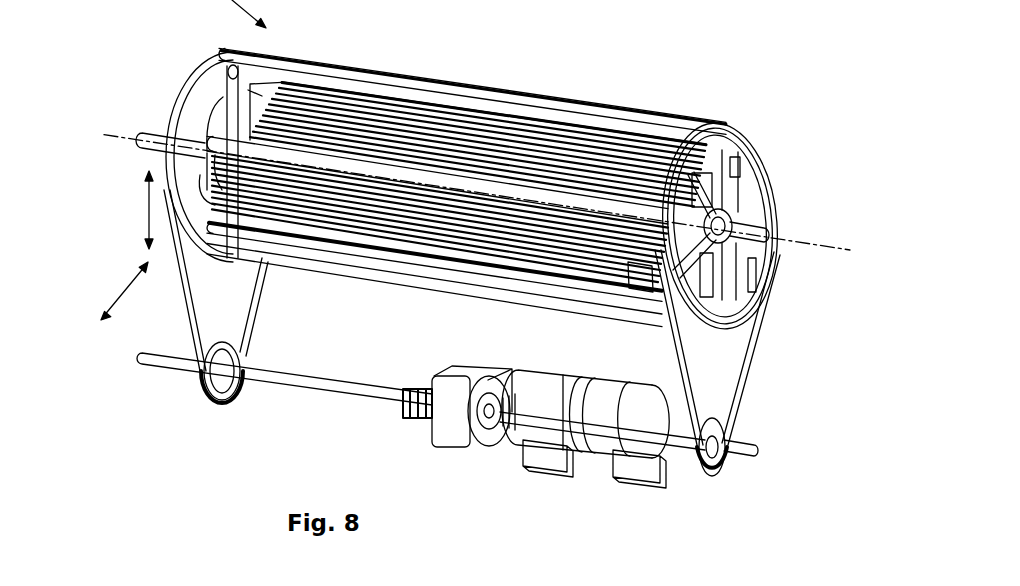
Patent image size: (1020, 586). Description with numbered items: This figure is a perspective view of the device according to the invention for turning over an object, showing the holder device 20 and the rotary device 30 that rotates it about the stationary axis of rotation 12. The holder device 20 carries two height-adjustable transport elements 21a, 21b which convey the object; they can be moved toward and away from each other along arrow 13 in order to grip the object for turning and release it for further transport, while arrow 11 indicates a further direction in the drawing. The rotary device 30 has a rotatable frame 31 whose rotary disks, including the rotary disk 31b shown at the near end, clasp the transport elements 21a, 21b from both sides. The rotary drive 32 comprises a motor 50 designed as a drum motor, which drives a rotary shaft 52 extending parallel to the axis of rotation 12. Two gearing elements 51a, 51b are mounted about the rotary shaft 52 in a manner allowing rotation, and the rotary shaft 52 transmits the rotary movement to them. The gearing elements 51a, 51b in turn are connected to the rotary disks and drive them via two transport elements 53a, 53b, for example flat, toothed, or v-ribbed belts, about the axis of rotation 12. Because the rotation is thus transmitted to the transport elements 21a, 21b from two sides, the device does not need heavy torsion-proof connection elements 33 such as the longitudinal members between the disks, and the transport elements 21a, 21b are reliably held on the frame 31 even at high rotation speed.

The longitudinal direction 11 is at (124, 291).
The axis of rotation 12 is at (846, 250).
The arrow 13 is at (136, 210).
The holder device 20 is at (708, 100).
The transport element 21a is at (324, 157).
The transport element 21b is at (411, 243).
The rotary device 30 is at (780, 220).
The frame 31 is at (770, 150).
The rotary disk 31b is at (178, 149).
The rotary drive 32 is at (509, 451).
The connection elements 33 is at (376, 72).
The motor 50 is at (580, 440).
The gearing element 51a is at (717, 462).
The gearing element 51b is at (221, 392).
The rotary shaft 52 is at (320, 383).
The transport element 53a is at (752, 356).
The transport element 53b is at (187, 342).